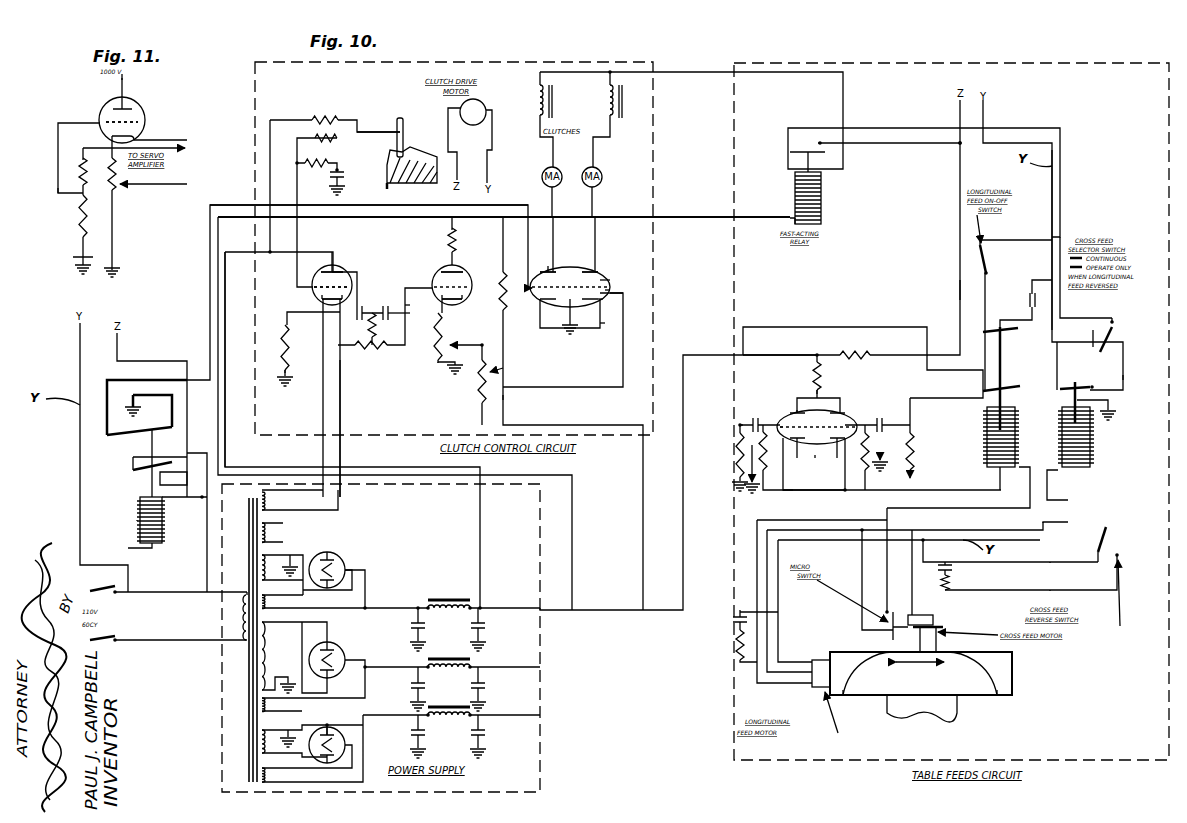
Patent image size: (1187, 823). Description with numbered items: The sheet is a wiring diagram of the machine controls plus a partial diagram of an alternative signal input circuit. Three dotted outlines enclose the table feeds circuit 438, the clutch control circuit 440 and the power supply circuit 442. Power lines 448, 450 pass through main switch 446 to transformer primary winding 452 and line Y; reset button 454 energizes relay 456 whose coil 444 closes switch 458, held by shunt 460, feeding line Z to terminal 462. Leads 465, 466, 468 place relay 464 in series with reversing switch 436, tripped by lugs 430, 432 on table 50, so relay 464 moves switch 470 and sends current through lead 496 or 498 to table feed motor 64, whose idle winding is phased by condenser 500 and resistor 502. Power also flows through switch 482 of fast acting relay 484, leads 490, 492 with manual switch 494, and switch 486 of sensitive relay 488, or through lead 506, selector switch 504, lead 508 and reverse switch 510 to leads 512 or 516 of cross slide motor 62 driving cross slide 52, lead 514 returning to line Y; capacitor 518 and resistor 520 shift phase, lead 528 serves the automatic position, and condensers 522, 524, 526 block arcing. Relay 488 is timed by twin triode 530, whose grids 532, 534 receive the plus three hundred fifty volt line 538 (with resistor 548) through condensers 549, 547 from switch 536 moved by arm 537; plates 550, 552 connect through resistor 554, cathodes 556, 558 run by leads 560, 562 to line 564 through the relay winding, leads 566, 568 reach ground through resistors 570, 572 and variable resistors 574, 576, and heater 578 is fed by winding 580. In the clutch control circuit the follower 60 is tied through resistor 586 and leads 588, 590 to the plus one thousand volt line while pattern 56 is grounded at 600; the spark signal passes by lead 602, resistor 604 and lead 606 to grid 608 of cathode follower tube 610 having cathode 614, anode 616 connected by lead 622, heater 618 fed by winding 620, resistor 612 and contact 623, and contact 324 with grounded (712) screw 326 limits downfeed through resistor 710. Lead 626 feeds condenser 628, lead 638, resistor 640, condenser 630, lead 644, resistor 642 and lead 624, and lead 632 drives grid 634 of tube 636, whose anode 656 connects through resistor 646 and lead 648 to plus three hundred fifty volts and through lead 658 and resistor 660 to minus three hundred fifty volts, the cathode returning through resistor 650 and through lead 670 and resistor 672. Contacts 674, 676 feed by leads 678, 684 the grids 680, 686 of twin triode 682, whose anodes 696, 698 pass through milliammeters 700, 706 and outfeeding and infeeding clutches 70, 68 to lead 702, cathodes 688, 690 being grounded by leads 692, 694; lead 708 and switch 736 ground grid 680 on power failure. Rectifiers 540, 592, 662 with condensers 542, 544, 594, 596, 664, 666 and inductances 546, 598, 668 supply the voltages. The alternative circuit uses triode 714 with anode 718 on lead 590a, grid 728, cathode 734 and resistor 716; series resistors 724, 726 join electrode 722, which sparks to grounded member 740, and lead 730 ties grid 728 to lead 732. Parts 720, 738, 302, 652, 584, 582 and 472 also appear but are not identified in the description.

In FIG. 11, the triode vacuum tube 714 is at (144, 114).
In FIG. 11, the anode 718 is at (117, 104).
In FIG. 11, the lead 590a is at (127, 90).
In FIG. 11, the grid 728 is at (108, 120).
In FIG. 11, the cathode 734 is at (151, 133).
In FIG. 11, the output conductor to servo amplifier 720 is at (90, 148).
In FIG. 11, the lead 730 is at (58, 142).
In FIG. 11, the resistor 724 is at (80, 168).
In FIG. 11, the lead 732 is at (58, 188).
In FIG. 11, the resistor 716 is at (111, 178).
In FIG. 11, the resistor 726 is at (82, 220).
In FIG. 11, the tap 738 is at (80, 250).
In FIG. 11, the electrode 722 is at (88, 248).
In FIG. 11, the ground member 740 is at (75, 258).
In FIG. 10, the clutch control circuit 440 is at (630, 62).
In FIG. 10, the power supply circuit 442 is at (541, 756).
In FIG. 10, the table feeds circuit 438 is at (1169, 657).
In FIG. 10, the lead 702 is at (685, 72).
In FIG. 10, the switch 482 is at (810, 150).
In FIG. 10, the fast acting relay 484 is at (792, 200).
In FIG. 10, the terminal 462 is at (955, 146).
In FIG. 10, the lead 490 is at (1060, 166).
In FIG. 10, the lead 465 is at (960, 295).
In FIG. 10, the outfeeding electromagnetic clutch 70 is at (535, 103).
In FIG. 10, the infeeding electromagnetic clutch 68 is at (623, 102).
In FIG. 10, the milliammeter 700 is at (542, 163).
In FIG. 10, the milliammeter 706 is at (601, 170).
In FIG. 10, the lead 708 is at (495, 205).
In FIG. 10, the resistor 646 is at (478, 218).
In FIG. 10, the lead 588 is at (270, 150).
In FIG. 10, the resistor 586 is at (312, 118).
In FIG. 10, the lead 602 is at (358, 128).
In FIG. 10, the resistor 604 is at (312, 130).
In FIG. 10, the conductor 302 is at (297, 163).
In FIG. 10, the resistor 710 is at (319, 173).
In FIG. 10, the micrometer screw 326 is at (347, 173).
In FIG. 10, the electrode point 324 is at (340, 168).
In FIG. 10, the ground 712 is at (346, 189).
In FIG. 10, the follower 60 is at (404, 122).
In FIG. 10, the pattern 56 is at (423, 152).
In FIG. 10, the ground 600 is at (390, 190).
In FIG. 10, the lead 606 is at (298, 226).
In FIG. 10, the lead 622 is at (298, 254).
In FIG. 10, the plus 1000 volt D.C. line 590 is at (225, 275).
In FIG. 10, the control grid 608 is at (335, 278).
In FIG. 10, the anode 616 is at (338, 270).
In FIG. 10, the triode vacuum tube 610 is at (313, 291).
In FIG. 10, the cathode 614 is at (328, 300).
In FIG. 10, the heater 618 is at (321, 398).
In FIG. 10, the lead 626 is at (289, 342).
In FIG. 10, the resistor 612 is at (283, 374).
In FIG. 10, the adjustable contact 623 is at (289, 374).
In FIG. 10, the condenser 628 is at (364, 305).
In FIG. 10, the lead 638 is at (370, 332).
In FIG. 10, the resistor 640 is at (386, 345).
In FIG. 10, the second condenser 630 is at (386, 305).
In FIG. 10, the lead 624 is at (341, 362).
In FIG. 10, the lead 644 is at (423, 292).
In FIG. 10, the lead 632 is at (422, 303).
In FIG. 10, the cathode 652 is at (423, 317).
In FIG. 10, the lead 648 is at (420, 218).
In FIG. 10, the lead 658 is at (455, 245).
In FIG. 10, the control grid 634 is at (452, 285).
In FIG. 10, the anode 656 is at (448, 268).
In FIG. 10, the triode vacuum tube 636 is at (462, 301).
In FIG. 10, the resistor 650 is at (443, 336).
In FIG. 10, the lead 670 is at (480, 346).
In FIG. 10, the resistor 642 is at (400, 360).
In FIG. 10, the resistor 660 is at (506, 268).
In FIG. 10, the resistor 672 is at (500, 370).
In FIG. 10, the contact 676 is at (503, 397).
In FIG. 10, the contact 674 is at (531, 266).
In FIG. 10, the control grid 680 is at (557, 284).
In FIG. 10, the lead 678 is at (532, 276).
In FIG. 10, the anode 696 is at (550, 280).
In FIG. 10, the anode 698 is at (590, 272).
In FIG. 10, the twin triode vacuum tube 682 is at (610, 281).
In FIG. 10, the control grid 686 is at (615, 293).
In FIG. 10, the cathode 690 is at (605, 299).
In FIG. 10, the cathode 688 is at (550, 312).
In FIG. 10, the lead 692 is at (590, 323).
In FIG. 10, the lead 694 is at (574, 332).
In FIG. 10, the lead 684 is at (568, 387).
In FIG. 10, the switch 736 is at (166, 425).
In FIG. 10, the switch 458 is at (133, 470).
In FIG. 10, the shunt 460 is at (173, 478).
In FIG. 10, the solenoid 444 is at (137, 502).
In FIG. 10, the relay 456 is at (135, 515).
In FIG. 10, the reset button 454 is at (200, 499).
In FIG. 10, the main power line 448 is at (157, 580).
In FIG. 10, the main switch 446 is at (116, 593).
In FIG. 10, the primary winding 452 is at (245, 606).
In FIG. 10, the main power line 450 is at (144, 656).
In FIG. 10, the secondary winding 620 is at (267, 502).
In FIG. 10, the secondary winding 580 is at (264, 533).
In FIG. 10, the vacuum rectifier 540 is at (340, 560).
In FIG. 10, the vacuum rectifier 592 is at (335, 642).
In FIG. 10, the vacuum rectifier tube 662 is at (345, 740).
In FIG. 10, the inductance 546 is at (438, 600).
In FIG. 10, the condenser 542 is at (408, 625).
In FIG. 10, the condenser 544 is at (486, 626).
In FIG. 10, the inductance 598 is at (440, 658).
In FIG. 10, the condenser 594 is at (410, 684).
In FIG. 10, the condenser 596 is at (487, 686).
In FIG. 10, the inductance 668 is at (445, 697).
In FIG. 10, the condenser 664 is at (422, 736).
In FIG. 10, the condenser 666 is at (487, 732).
In FIG. 10, the plus 350 volt D.C. supply line 538 is at (600, 610).
In FIG. 10, the lead 568 is at (757, 327).
In FIG. 10, the resistor 548 is at (870, 352).
In FIG. 10, the resistor 554 is at (817, 370).
In FIG. 10, the plate 552 is at (820, 385).
In FIG. 10, the control grid 534 is at (827, 420).
In FIG. 10, the plate 550 is at (797, 408).
In FIG. 10, the twin triode vacuum tube 530 is at (760, 418).
In FIG. 10, the control grid 532 is at (780, 425).
In FIG. 10, the cathode 556 is at (793, 442).
In FIG. 10, the cathode 558 is at (840, 442).
In FIG. 10, the condenser 549 is at (740, 425).
In FIG. 10, the variable resistor 576 is at (740, 430).
In FIG. 10, the fixed resistor 572 is at (738, 452).
In FIG. 10, the potentiometer 584 is at (752, 490).
In FIG. 10, the lead 560 is at (793, 462).
In FIG. 10, the heater 578 is at (815, 460).
In FIG. 10, the lead 562 is at (792, 490).
In FIG. 10, the condenser 547 is at (880, 418).
In FIG. 10, the potentiometer 582 is at (872, 465).
In FIG. 10, the fixed resistor 570 is at (926, 438).
In FIG. 10, the variable resistor 574 is at (858, 490).
In FIG. 10, the line 564 is at (922, 492).
In FIG. 10, the lead 566 is at (983, 390).
In FIG. 10, the switch 536 is at (974, 386).
In FIG. 10, the arm 537 is at (985, 335).
In FIG. 10, the blocking condenser 526 is at (1001, 370).
In FIG. 10, the relay 464 is at (980, 432).
In FIG. 10, the lead 466 is at (944, 508).
In FIG. 10, the sensitive relay 488 is at (1095, 443).
In FIG. 10, the lead 498 is at (1071, 488).
In FIG. 10, the lead 528 is at (1110, 390).
In FIG. 10, the selector switch 504 is at (1124, 350).
In FIG. 10, the switch 486 is at (1105, 388).
In FIG. 10, the lead 508 is at (1120, 408).
In FIG. 10, the lead 506 is at (1092, 385).
In FIG. 10, the blocking condenser 522 is at (1112, 328).
In FIG. 10, the lead 492 is at (1086, 292).
In FIG. 10, the manually operated switch 494 is at (987, 250).
In FIG. 10, the switch 470 is at (1008, 290).
In FIG. 10, the blocking condenser 524 is at (1033, 290).
In FIG. 10, the lead 496 is at (1068, 520).
In FIG. 10, the reverse switch 510 is at (1108, 548).
In FIG. 10, the lead 514 is at (917, 548).
In FIG. 10, the capacitor 518 is at (952, 567).
In FIG. 10, the resistor 520 is at (952, 582).
In FIG. 10, the lead 512 is at (1030, 562).
In FIG. 10, the lead 516 is at (1045, 590).
In FIG. 10, the phase shifting condenser 500 is at (738, 628).
In FIG. 10, the resistor 502 is at (738, 648).
In FIG. 10, the lead 468 is at (885, 612).
In FIG. 10, the reversing switch 436 is at (893, 633).
In FIG. 10, the cross slide feed motor 62 is at (935, 615).
In FIG. 10, the motor shaft 472 is at (943, 628).
In FIG. 10, the table 50 is at (1000, 687).
In FIG. 10, the reversing lug 430 is at (843, 695).
In FIG. 10, the reversing lug 432 is at (997, 695).
In FIG. 10, the cross slide 52 is at (920, 708).
In FIG. 10, the table feed motor 64 is at (820, 660).